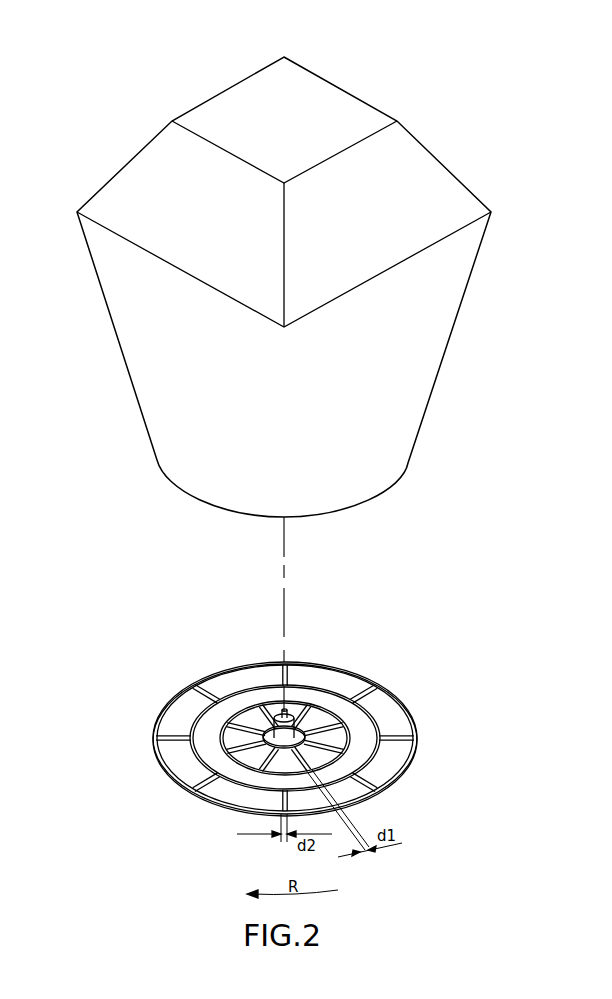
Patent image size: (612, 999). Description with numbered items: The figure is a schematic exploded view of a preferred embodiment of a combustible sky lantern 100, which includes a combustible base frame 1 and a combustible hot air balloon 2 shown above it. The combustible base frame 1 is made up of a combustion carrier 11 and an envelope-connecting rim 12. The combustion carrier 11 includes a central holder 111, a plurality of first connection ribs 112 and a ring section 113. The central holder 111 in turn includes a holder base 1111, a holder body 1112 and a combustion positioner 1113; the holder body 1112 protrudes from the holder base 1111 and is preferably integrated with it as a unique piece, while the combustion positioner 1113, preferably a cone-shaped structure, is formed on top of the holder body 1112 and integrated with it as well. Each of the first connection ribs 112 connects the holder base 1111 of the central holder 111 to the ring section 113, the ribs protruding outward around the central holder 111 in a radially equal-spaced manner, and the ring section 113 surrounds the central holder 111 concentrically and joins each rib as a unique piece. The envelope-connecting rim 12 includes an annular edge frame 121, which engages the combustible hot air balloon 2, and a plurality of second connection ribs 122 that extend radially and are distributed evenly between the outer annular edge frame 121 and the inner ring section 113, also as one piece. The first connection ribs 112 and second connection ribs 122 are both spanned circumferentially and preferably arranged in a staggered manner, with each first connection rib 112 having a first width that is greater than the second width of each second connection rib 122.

The combustible sky lantern 100 is at (68, 86).
The combustible hot air balloon 2 is at (442, 334).
The combustible base frame 1 is at (129, 701).
The combustion carrier 11 is at (482, 685).
The central holder 111 is at (298, 726).
The first connection ribs 112 is at (338, 737).
The ring section 113 is at (353, 763).
The holder base 1111 is at (252, 725).
The holder body 1112 is at (262, 727).
The combustion positioner 1113 is at (299, 727).
The envelope-connecting rim 12 is at (86, 763).
The annular edge frame 121 is at (157, 757).
The second connection ribs 122 is at (178, 782).